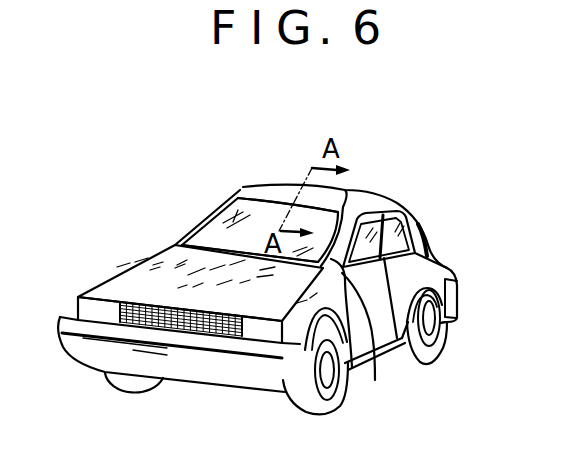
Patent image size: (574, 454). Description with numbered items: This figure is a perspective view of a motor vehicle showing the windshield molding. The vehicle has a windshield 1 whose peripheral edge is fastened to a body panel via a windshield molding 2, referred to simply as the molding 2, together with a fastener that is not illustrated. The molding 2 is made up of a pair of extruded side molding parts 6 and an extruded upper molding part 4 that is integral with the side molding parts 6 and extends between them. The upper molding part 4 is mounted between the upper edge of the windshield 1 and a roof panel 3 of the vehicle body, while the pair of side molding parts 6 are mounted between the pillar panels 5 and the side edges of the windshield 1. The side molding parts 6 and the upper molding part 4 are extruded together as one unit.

The windshield 1 is at (243, 226).
The windshield molding 2 is at (196, 209).
The roof panel 3 is at (373, 203).
The upper molding part 4 is at (277, 203).
The pillar panel 5 is at (375, 380).
The side molding part 6 is at (185, 230).